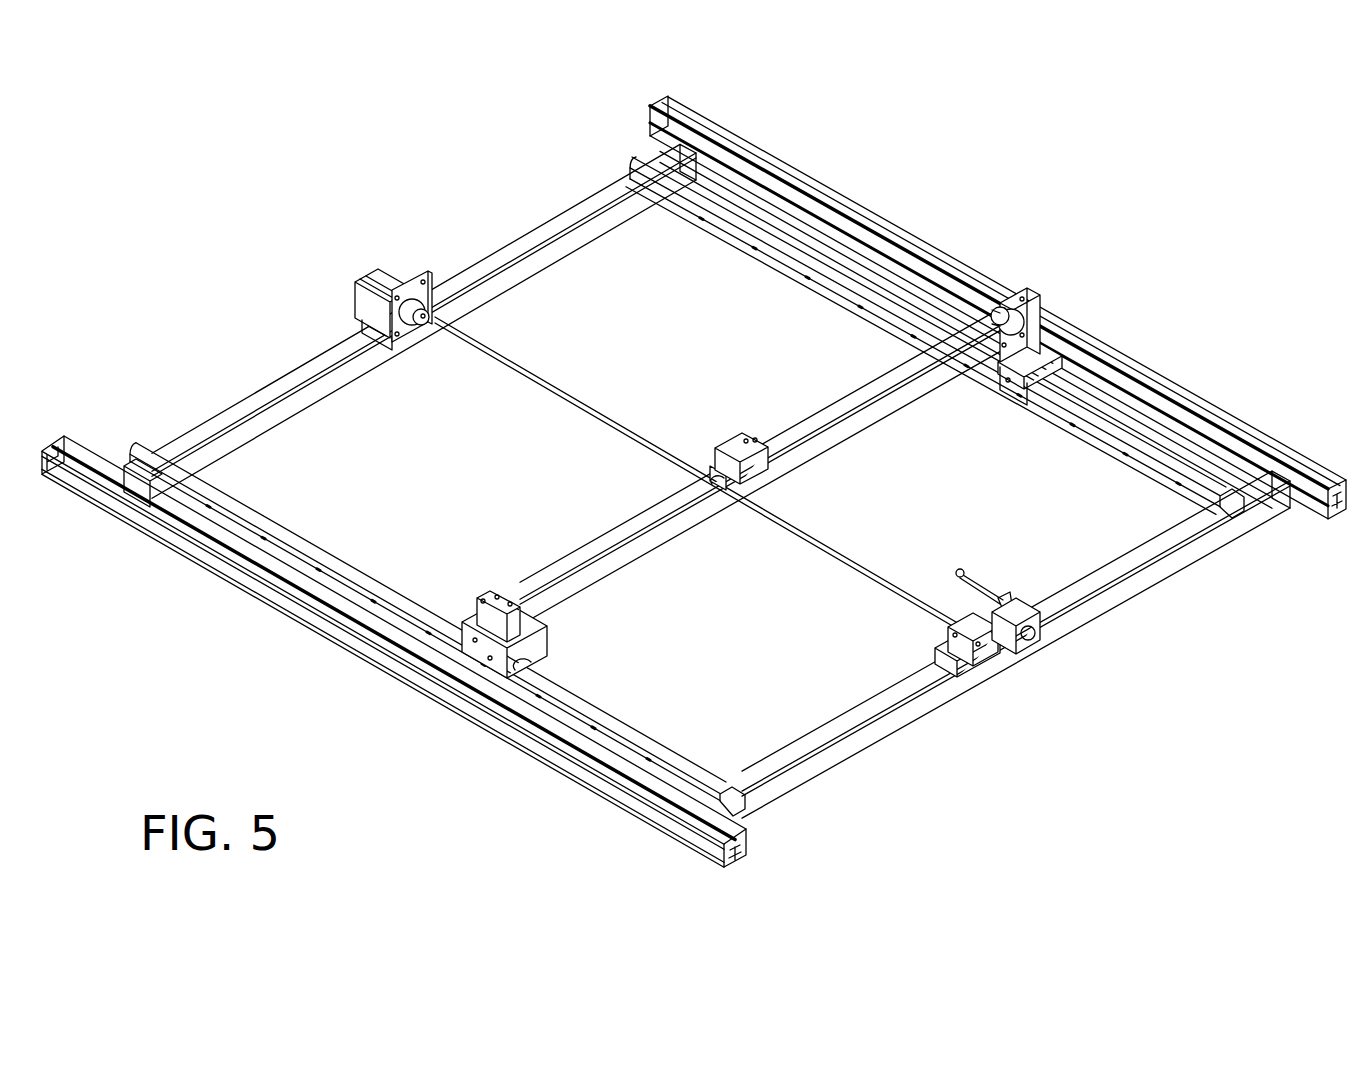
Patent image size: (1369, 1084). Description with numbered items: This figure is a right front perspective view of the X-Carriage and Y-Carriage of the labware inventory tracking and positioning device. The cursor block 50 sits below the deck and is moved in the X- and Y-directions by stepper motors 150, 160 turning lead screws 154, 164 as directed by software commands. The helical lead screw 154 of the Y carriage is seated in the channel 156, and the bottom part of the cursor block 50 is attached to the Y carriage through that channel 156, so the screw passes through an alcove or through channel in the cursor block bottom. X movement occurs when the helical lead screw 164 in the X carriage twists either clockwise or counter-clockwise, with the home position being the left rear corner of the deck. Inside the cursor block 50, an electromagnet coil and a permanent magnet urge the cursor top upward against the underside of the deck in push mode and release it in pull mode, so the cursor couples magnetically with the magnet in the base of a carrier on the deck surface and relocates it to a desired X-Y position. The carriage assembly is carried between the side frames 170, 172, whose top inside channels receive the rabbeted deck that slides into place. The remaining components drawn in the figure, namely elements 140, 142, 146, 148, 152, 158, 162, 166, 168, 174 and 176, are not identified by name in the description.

The cursor block 50 is at (745, 438).
The first guide rail 140 is at (130, 450).
The second guide rail 142 is at (630, 152).
The first bearing block 146 is at (480, 650).
The frame plate 148 is at (1055, 375).
The stepper motor 150 is at (1035, 285).
The bracket base plate 152 is at (1050, 350).
The lead screw 154 is at (965, 325).
The channel 156 is at (866, 385).
The rail shoe 158 is at (705, 465).
The stepper motor 160 is at (365, 280).
The motor flange 162 is at (360, 330).
The lead screw 164 is at (467, 345).
The end support block 166 is at (1035, 660).
The end bearing 168 is at (1040, 645).
The side frame 170 is at (1330, 470).
The side frame 172 is at (685, 845).
The front frame member 174 is at (828, 760).
The rear frame member 176 is at (235, 410).